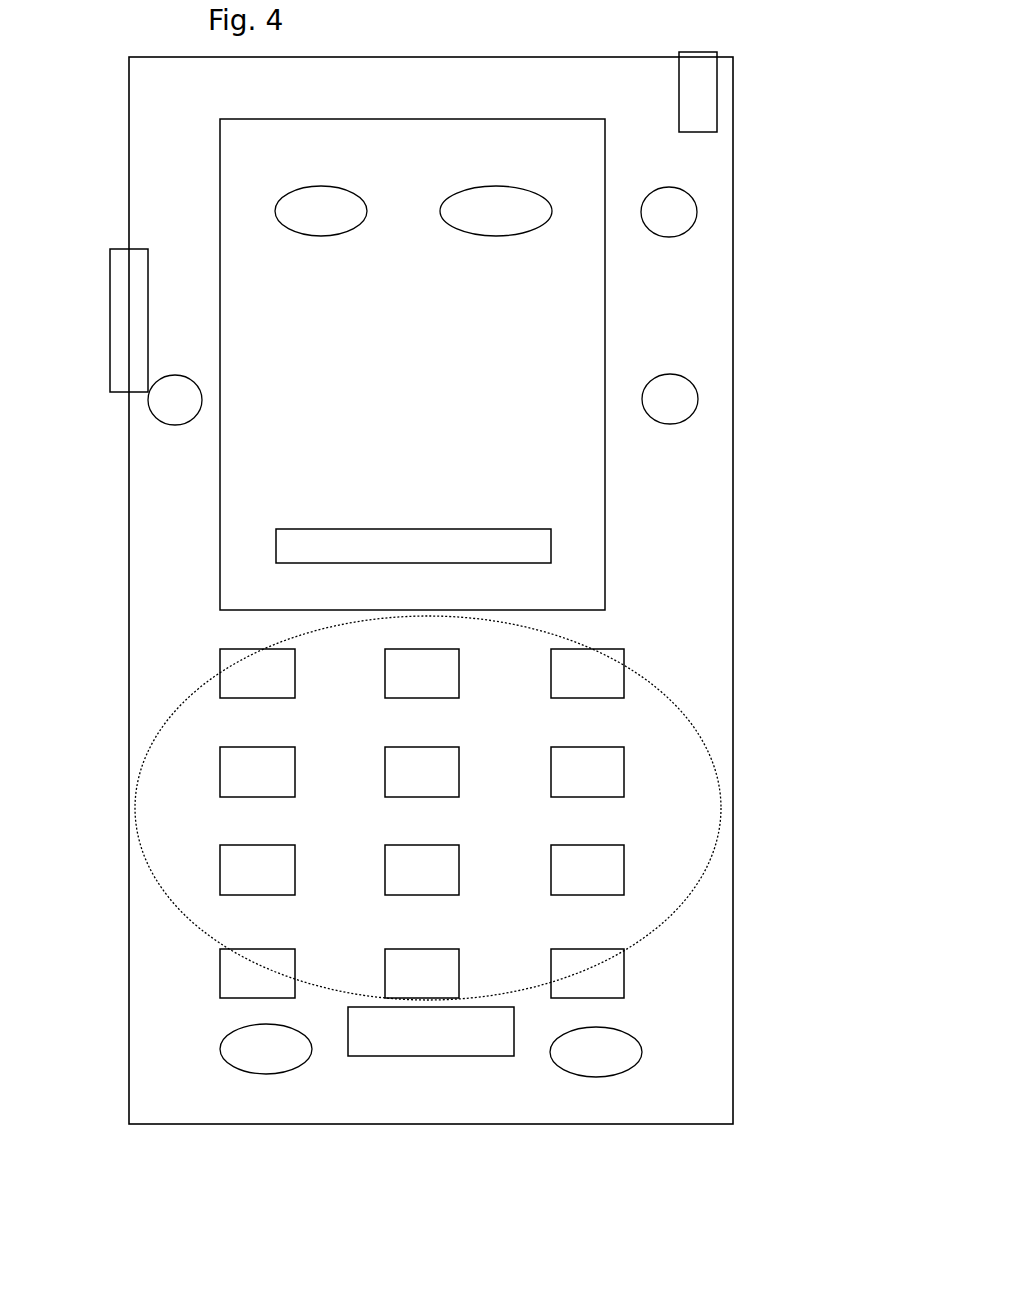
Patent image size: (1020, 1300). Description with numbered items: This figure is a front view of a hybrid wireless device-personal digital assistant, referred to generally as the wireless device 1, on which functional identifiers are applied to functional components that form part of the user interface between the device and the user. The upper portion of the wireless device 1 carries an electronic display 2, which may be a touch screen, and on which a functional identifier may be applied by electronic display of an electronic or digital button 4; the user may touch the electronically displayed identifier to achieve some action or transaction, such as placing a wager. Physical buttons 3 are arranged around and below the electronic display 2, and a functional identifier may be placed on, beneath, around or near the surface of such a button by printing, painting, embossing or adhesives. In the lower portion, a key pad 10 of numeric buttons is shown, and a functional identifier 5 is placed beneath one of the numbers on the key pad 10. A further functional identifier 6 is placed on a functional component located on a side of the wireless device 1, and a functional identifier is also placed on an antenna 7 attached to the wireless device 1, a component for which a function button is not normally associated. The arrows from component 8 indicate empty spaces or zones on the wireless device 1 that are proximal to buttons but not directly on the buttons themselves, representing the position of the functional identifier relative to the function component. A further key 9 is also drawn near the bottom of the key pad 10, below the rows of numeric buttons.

The wireless device 1 is at (95, 83).
The electronic display 2 is at (415, 117).
The physical buttons 3 is at (651, 233).
The electronic or digital button 4 is at (461, 229).
The functional identifier 5 is at (589, 702).
The functional identifier 6 is at (102, 300).
The antenna 7 is at (699, 86).
The component 8 is at (698, 670).
The function key 9 is at (342, 1018).
The key pad 10 is at (134, 795).